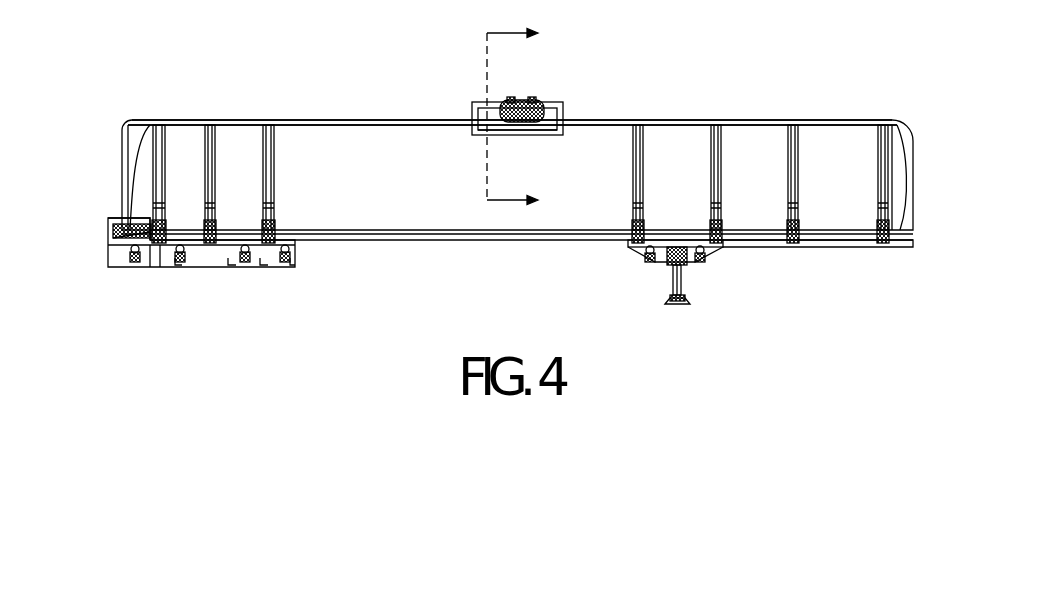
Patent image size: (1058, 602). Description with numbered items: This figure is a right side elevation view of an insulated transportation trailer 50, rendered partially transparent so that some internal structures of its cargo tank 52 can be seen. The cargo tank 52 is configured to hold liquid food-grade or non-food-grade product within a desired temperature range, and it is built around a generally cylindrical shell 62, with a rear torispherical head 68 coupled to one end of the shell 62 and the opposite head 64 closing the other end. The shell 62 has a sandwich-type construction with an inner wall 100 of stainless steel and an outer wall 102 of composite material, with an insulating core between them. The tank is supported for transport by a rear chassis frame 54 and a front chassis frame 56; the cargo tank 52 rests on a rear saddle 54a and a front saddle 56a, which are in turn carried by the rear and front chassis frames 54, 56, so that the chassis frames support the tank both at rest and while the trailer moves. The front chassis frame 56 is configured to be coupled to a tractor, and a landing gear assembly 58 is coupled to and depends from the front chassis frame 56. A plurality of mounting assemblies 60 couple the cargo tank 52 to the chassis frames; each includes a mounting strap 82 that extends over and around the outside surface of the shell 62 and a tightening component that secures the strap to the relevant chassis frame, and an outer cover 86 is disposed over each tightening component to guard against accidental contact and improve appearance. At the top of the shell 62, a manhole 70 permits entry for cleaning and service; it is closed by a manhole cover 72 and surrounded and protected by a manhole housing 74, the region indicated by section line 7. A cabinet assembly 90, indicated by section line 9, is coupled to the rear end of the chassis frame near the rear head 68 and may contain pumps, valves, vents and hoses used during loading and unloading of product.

The transportation trailer 50 is at (501, 168).
The cargo tank 52 is at (300, 100).
The rear chassis frame 54 is at (236, 266).
The rear saddle 54a is at (308, 245).
The front chassis frame 56 is at (625, 243).
The front saddle 56a is at (838, 255).
The landing gear assembly 58 is at (688, 278).
The mounting assembly 60 is at (222, 225).
The shell 62 is at (808, 110).
The rear head 64 is at (916, 157).
The rear torispherical head 68 is at (127, 172).
The manhole 70 is at (521, 130).
The manhole cover 72 is at (548, 100).
The manhole housing 74 is at (571, 108).
The mounting strap 82 is at (270, 146).
The outer cover 86 is at (272, 216).
The cabinet assembly 90 is at (108, 228).
The section line 9 is at (118, 188).
The section line 7 is at (523, 120).
The inner wall 100 is at (382, 127).
The outer wall 102 is at (332, 121).